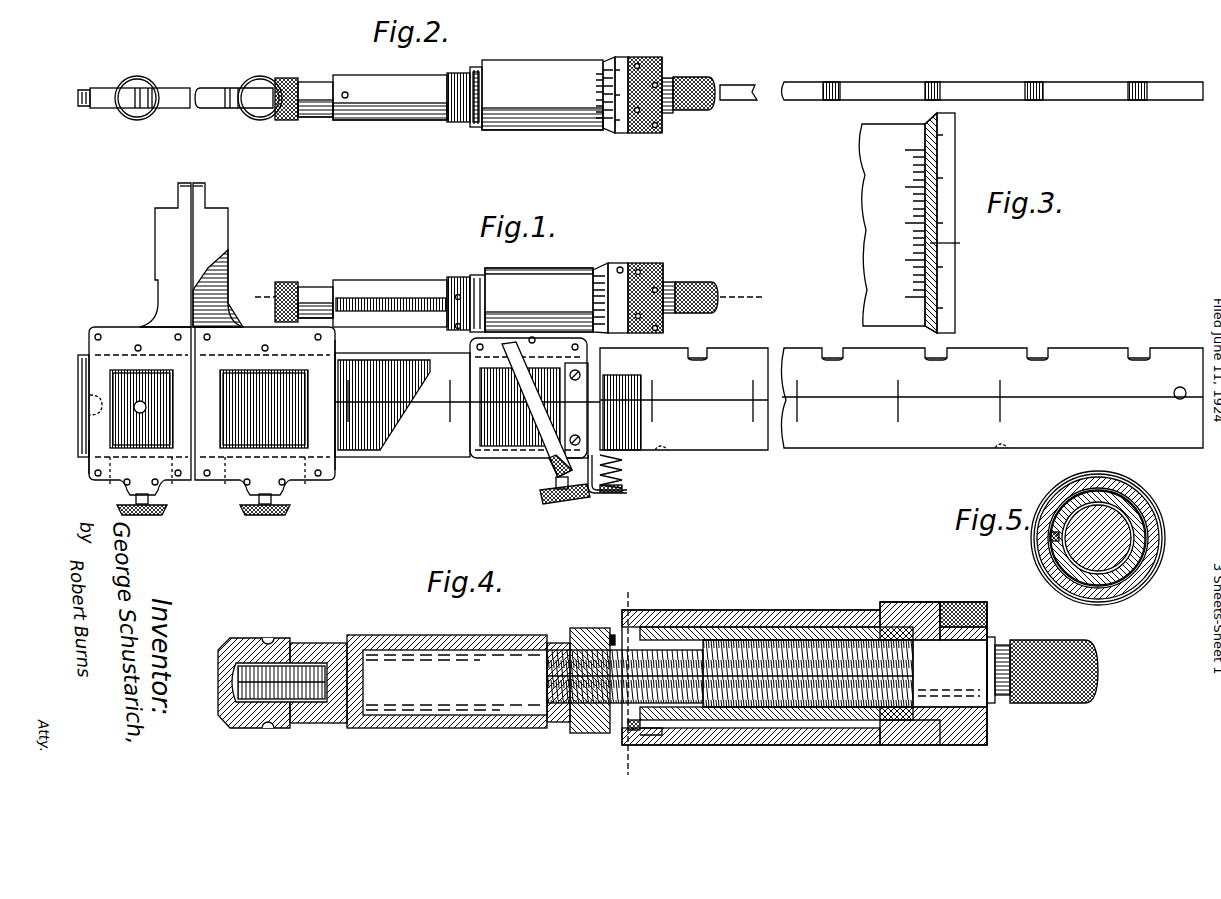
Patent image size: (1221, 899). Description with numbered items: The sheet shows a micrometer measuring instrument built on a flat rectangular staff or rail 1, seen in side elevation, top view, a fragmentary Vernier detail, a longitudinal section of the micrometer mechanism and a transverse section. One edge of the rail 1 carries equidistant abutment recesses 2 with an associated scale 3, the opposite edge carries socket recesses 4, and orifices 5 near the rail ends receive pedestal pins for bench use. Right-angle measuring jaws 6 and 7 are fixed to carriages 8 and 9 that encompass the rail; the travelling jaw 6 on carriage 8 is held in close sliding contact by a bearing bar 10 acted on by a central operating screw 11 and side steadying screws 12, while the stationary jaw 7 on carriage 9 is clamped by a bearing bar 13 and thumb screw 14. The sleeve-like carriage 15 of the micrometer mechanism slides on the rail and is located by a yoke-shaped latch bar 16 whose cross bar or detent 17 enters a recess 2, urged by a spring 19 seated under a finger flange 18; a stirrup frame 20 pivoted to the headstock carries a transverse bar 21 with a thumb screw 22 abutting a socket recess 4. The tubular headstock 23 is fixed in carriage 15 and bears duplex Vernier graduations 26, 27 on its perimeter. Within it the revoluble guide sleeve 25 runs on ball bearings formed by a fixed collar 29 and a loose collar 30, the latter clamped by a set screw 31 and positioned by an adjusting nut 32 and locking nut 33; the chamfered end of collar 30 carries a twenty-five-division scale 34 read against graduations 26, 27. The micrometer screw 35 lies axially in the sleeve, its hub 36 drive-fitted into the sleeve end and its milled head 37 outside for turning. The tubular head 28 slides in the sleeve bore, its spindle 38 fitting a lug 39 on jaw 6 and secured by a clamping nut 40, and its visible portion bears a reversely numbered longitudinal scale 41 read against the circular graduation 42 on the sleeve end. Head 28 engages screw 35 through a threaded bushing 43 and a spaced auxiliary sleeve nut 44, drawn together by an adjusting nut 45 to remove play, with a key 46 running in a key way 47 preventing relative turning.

In FIG. 2, the staff or rail 1 is at (890, 80).
In FIG. 1, the staff or rail 1 is at (78, 392).
In FIG. 2, the abutment recesses 2 is at (828, 84).
In FIG. 1, the abutment recesses 2 is at (700, 354).
In FIG. 1, the scale or graduation 3 is at (440, 403).
In FIG. 1, the socket recesses 4 is at (1005, 456).
In FIG. 1, the orifices 5 is at (86, 412).
In FIG. 4, the orifices 5 is at (626, 679).
In FIG. 2, the measuring jaw 6 is at (210, 92).
In FIG. 1, the measuring jaw 6 is at (228, 243).
In FIG. 2, the measuring jaw 7 is at (170, 92).
In FIG. 1, the measuring jaw 7 is at (155, 243).
In FIG. 2, the carriage 8 is at (232, 88).
In FIG. 1, the carriage 8 is at (325, 405).
In FIG. 2, the carriage 9 is at (92, 92).
In FIG. 1, the carriage 9 is at (86, 446).
In FIG. 1, the bearing bar 10 is at (262, 463).
In FIG. 2, the central operating screw 11 is at (255, 120).
In FIG. 1, the central operating screw 11 is at (265, 516).
In FIG. 1, the side steadying screws 12 is at (216, 484).
In FIG. 1, the bearing bar 13 is at (132, 460).
In FIG. 2, the thumb screw 14 is at (137, 120).
In FIG. 1, the thumb screw 14 is at (148, 516).
In FIG. 1, the carriage 15 is at (528, 397).
In FIG. 1, the latch bar 16 is at (588, 482).
In FIG. 1, the cross bar or detent 17 is at (622, 404).
In FIG. 1, the head or flange 18 is at (628, 492).
In FIG. 1, the spring 19 is at (624, 470).
In FIG. 1, the stirrup frame 20 is at (530, 442).
In FIG. 1, the transverse bar 21 is at (555, 484).
In FIG. 1, the thumb screw 22 is at (553, 505).
In FIG. 2, the headstock 23 is at (542, 95).
In FIG. 3, the headstock 23 is at (870, 226).
In FIG. 1, the headstock 23 is at (539, 300).
In FIG. 4, the headstock 23 is at (795, 612).
In FIG. 5, the headstock 23 is at (1160, 560).
In FIG. 2, the guide sleeve 25 is at (476, 70).
In FIG. 1, the guide sleeve 25 is at (470, 302).
In FIG. 4, the guide sleeve 25 is at (796, 625).
In FIG. 5, the guide sleeve 25 is at (1126, 510).
In FIG. 2, the graduations 26 is at (596, 83).
In FIG. 3, the graduations 26 is at (904, 178).
In FIG. 2, the graduations 27 is at (596, 110).
In FIG. 3, the graduations 27 is at (904, 282).
In FIG. 1, the graduations 27 is at (593, 291).
In FIG. 2, the head or stem 28 is at (390, 97).
In FIG. 1, the head or stem 28 is at (352, 283).
In FIG. 4, the head or stem 28 is at (440, 714).
In FIG. 2, the peripheral collar 29 is at (476, 128).
In FIG. 1, the peripheral collar 29 is at (480, 276).
In FIG. 4, the peripheral collar 29 is at (586, 628).
In FIG. 2, the loose collar 30 is at (623, 57).
In FIG. 3, the loose collar 30 is at (946, 161).
In FIG. 1, the loose collar 30 is at (640, 265).
In FIG. 4, the loose collar 30 is at (900, 612).
In FIG. 1, the set screw 31 is at (621, 266).
In FIG. 4, the set screw 31 is at (905, 745).
In FIG. 2, the adjusting nut 32 is at (646, 60).
In FIG. 1, the adjusting nut 32 is at (664, 268).
In FIG. 4, the adjusting nut 32 is at (946, 603).
In FIG. 2, the locking nut 33 is at (663, 62).
In FIG. 1, the locking nut 33 is at (668, 273).
In FIG. 4, the locking nut 33 is at (988, 606).
In FIG. 2, the peripheral graduation or scale 34 is at (601, 63).
In FIG. 3, the peripheral graduation or scale 34 is at (960, 247).
In FIG. 1, the peripheral graduation or scale 34 is at (599, 268).
In FIG. 2, the micrometer screw 35 is at (670, 114).
In FIG. 1, the micrometer screw 35 is at (672, 311).
In FIG. 4, the micrometer screw 35 is at (736, 640).
In FIG. 5, the micrometer screw 35 is at (1066, 510).
In FIG. 4, the hub 36 is at (950, 673).
In FIG. 2, the milled head 37 is at (712, 101).
In FIG. 1, the milled head 37 is at (720, 291).
In FIG. 4, the milled head 37 is at (1040, 641).
In FIG. 4, the shank or spindle 38 is at (279, 682).
In FIG. 2, the lug 39 is at (316, 82).
In FIG. 1, the lug 39 is at (315, 287).
In FIG. 4, the lug 39 is at (313, 643).
In FIG. 2, the clamping nut 40 is at (287, 121).
In FIG. 1, the clamping nut 40 is at (286, 282).
In FIG. 4, the clamping nut 40 is at (272, 638).
In FIG. 1, the longitudinal scale 41 is at (401, 286).
In FIG. 2, the circular graduation 42 is at (455, 122).
In FIG. 1, the circular graduation 42 is at (457, 277).
In FIG. 4, the bushing 43 is at (559, 643).
In FIG. 5, the bushing 43 is at (1150, 536).
In FIG. 4, the auxiliary sleeve nut 44 is at (690, 627).
In FIG. 5, the auxiliary sleeve nut 44 is at (1142, 520).
In FIG. 4, the adjusting nut 45 is at (612, 635).
In FIG. 4, the key 46 is at (630, 731).
In FIG. 5, the key 46 is at (1049, 539).
In FIG. 4, the key way 47 is at (656, 736).